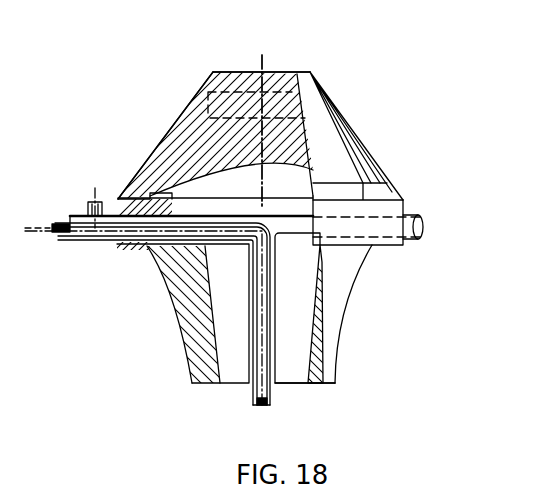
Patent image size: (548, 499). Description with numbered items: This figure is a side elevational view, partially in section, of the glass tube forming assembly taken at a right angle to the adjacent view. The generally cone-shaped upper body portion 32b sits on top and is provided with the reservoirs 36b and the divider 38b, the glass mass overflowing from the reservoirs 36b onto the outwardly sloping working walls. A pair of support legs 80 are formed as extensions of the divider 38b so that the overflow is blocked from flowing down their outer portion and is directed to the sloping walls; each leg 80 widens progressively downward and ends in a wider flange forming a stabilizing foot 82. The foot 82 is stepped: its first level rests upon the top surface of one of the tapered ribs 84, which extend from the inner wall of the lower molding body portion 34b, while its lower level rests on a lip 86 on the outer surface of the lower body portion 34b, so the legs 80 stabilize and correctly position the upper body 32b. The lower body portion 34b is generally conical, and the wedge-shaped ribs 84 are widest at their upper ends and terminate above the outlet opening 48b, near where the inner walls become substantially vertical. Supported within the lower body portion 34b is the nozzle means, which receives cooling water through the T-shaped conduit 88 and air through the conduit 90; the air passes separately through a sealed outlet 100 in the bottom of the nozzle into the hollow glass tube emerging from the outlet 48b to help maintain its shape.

The upper body portion 32b is at (347, 107).
The lower molding body portion 34b is at (318, 285).
The reservoirs 36b is at (238, 66).
The divider 38b is at (238, 70).
The outlet opening 48b is at (292, 385).
The support legs 80 is at (192, 103).
The stabilizing foot 82 is at (138, 206).
The tapered ribs 84 is at (205, 272).
The lip 86 is at (118, 202).
The T-shaped conduit 88 is at (97, 246).
The conduit 90 is at (62, 242).
The outlet 100 is at (265, 408).